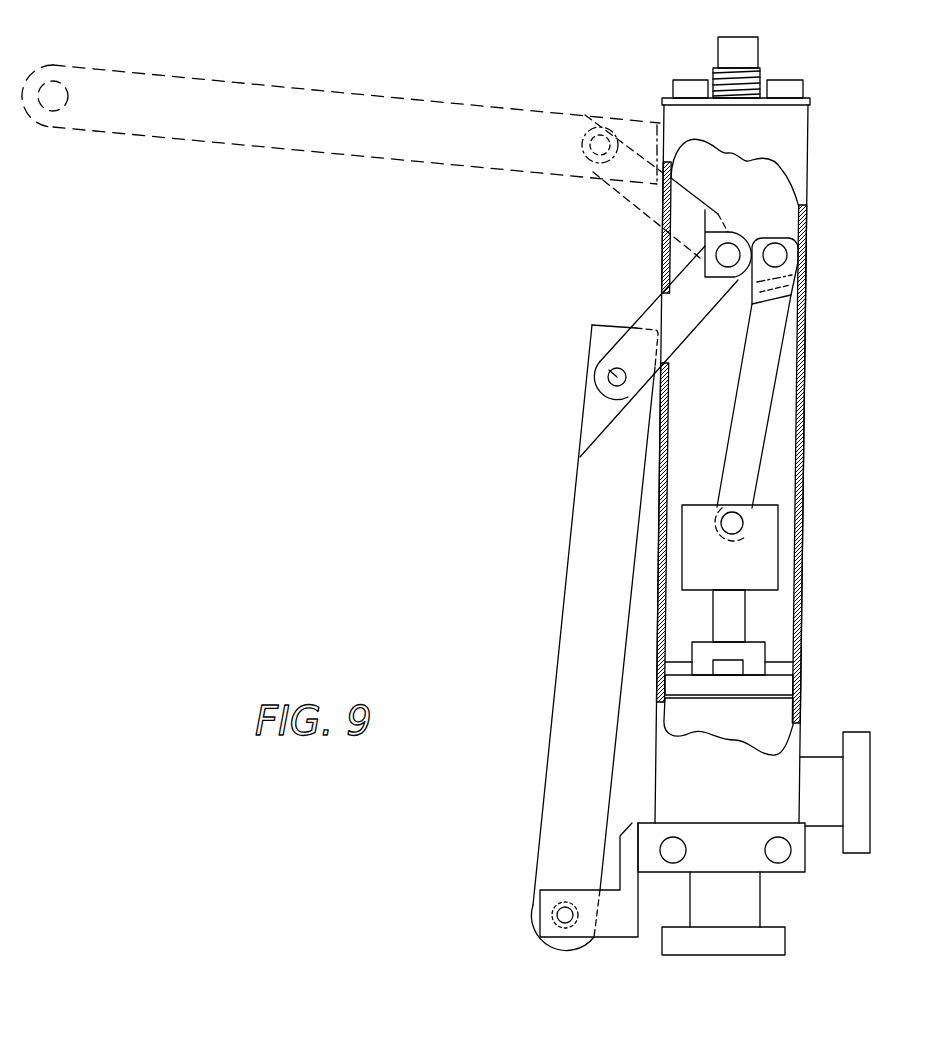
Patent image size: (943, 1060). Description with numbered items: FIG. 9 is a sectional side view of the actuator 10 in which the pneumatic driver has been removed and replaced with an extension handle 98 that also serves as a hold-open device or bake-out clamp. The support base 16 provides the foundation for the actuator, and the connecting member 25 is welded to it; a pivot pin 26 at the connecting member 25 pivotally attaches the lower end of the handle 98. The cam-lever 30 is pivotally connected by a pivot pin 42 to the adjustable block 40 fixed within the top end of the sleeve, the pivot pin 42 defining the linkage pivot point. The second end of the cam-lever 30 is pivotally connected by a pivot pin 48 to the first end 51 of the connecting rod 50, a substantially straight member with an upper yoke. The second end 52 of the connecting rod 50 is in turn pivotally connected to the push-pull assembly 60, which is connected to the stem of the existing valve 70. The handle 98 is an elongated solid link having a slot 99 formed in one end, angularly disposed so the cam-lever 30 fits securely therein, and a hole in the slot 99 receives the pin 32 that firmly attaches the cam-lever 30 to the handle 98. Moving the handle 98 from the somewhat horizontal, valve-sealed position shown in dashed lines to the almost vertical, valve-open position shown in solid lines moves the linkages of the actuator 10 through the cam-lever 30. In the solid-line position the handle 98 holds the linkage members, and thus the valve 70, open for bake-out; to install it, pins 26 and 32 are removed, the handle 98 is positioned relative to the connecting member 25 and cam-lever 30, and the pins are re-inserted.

The actuator 10 is at (584, 84).
The support base 16 is at (810, 872).
The connecting member 25 is at (630, 938).
The pivot pin 26 is at (556, 912).
The cam-lever 30 is at (648, 318).
The pin 32 is at (610, 372).
The adjustable block 40 is at (778, 202).
The pivot pin 42 is at (733, 243).
The pivot pin 48 is at (782, 257).
The connecting rod 50 is at (753, 367).
The first end of connecting rod 51 is at (798, 282).
The second end of connecting rod 52 is at (744, 529).
The push-pull assembly 60 is at (780, 512).
The valve 70 is at (757, 716).
The extension handle 98 is at (288, 150).
The slot 99 is at (598, 412).